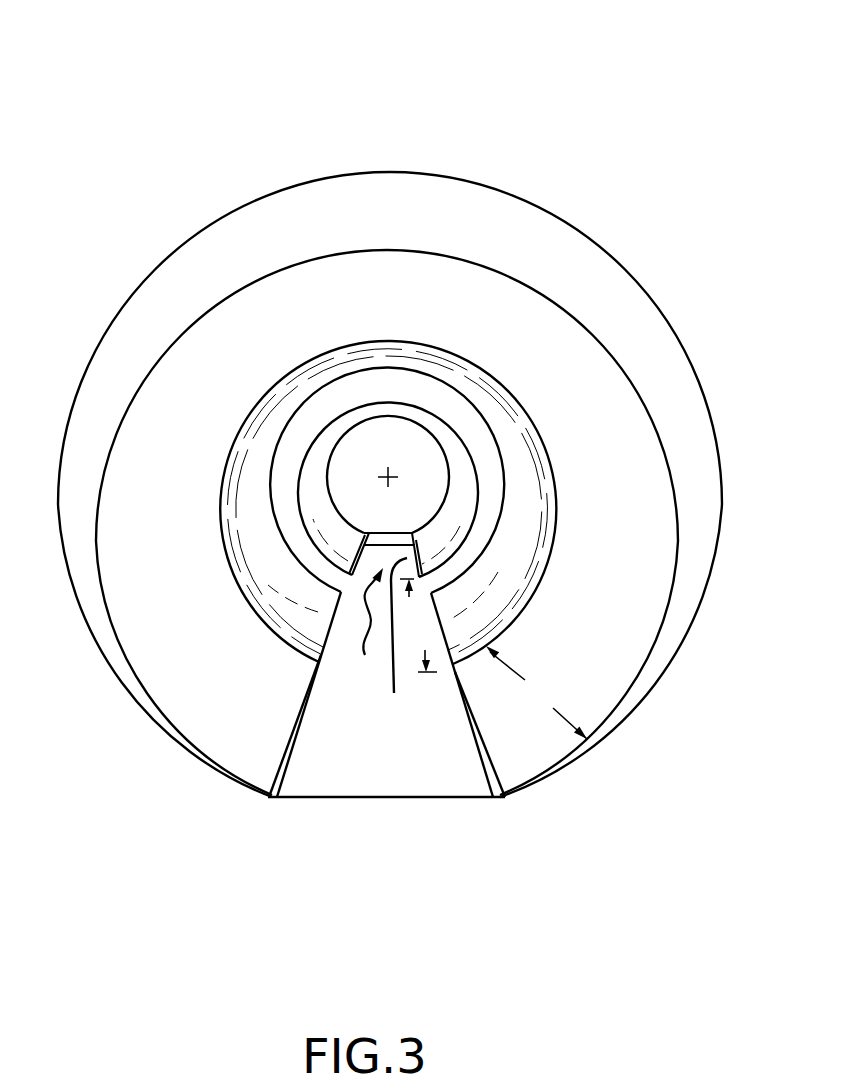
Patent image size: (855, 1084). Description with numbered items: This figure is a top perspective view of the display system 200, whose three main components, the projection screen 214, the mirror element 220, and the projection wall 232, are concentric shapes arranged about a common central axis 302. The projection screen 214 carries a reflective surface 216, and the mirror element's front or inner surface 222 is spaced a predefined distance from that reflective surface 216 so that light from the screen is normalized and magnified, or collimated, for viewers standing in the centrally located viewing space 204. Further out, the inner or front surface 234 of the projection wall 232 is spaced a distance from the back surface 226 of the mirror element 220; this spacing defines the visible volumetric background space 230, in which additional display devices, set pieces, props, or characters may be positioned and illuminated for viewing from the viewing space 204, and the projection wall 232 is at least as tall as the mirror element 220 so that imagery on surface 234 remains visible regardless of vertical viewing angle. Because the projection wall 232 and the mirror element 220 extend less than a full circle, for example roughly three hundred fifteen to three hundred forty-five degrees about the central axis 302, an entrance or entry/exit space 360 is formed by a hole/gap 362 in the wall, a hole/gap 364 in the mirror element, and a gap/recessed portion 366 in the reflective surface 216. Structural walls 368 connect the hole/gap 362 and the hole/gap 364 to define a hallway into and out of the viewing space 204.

The display system 200 is at (618, 97).
The projection wall 232 is at (624, 246).
The inner or front surface of the projection wall 234 is at (660, 350).
The visible volumetric background space 230 is at (634, 486).
The projection screen 214 is at (428, 398).
The reflective surface 216 is at (451, 443).
The central axis 302 is at (387, 475).
The front or inner surface of the mirror element 222 is at (295, 533).
The mirror element 220 is at (258, 661).
The viewing space 204 is at (362, 631).
The hole/gap in the mirror element 364 is at (330, 653).
The back surface of the mirror element 226 is at (287, 632).
The gap/recessed portion 366 is at (394, 693).
The entrance or entry/exit space 360 is at (366, 822).
The structural walls 368 is at (482, 763).
The hole/gap in the wall 362 is at (503, 798).